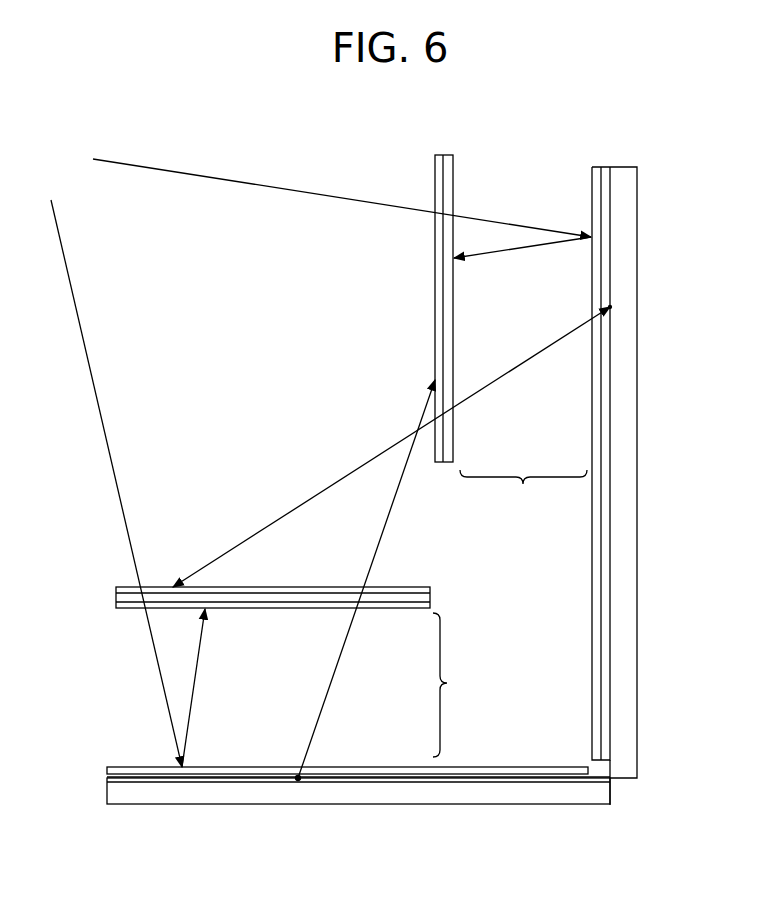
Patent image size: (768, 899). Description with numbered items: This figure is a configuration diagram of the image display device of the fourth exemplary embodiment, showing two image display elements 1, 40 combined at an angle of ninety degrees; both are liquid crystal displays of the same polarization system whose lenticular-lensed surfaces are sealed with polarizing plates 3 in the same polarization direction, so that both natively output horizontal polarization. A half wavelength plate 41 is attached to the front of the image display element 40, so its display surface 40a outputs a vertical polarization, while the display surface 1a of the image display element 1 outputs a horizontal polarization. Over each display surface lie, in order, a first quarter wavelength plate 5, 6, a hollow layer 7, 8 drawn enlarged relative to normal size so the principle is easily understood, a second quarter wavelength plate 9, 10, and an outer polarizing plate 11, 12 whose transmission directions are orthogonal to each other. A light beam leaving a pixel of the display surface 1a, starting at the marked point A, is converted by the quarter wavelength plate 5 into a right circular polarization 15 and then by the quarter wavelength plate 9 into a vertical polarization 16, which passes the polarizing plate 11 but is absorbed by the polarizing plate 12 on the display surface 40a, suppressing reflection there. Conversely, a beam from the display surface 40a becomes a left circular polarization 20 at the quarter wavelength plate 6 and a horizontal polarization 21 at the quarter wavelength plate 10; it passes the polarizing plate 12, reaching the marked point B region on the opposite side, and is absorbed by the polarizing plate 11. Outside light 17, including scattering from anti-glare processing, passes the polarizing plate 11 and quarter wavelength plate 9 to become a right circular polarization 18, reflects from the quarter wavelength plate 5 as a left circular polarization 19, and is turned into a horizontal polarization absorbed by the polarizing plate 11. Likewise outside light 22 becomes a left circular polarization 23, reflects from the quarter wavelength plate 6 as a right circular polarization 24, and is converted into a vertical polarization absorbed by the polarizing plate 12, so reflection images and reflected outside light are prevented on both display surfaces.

The image display element 1 is at (345, 805).
The display surface 1a is at (385, 772).
The polarizing plate 3 is at (638, 741).
The first quarter wavelength plate 5 is at (140, 776).
The first quarter wavelength plate 6 is at (591, 284).
The hollow layer 7 is at (451, 685).
The hollow layer 8 is at (523, 493).
The second quarter wavelength plate 9 is at (283, 609).
The second quarter wavelength plate 10 is at (447, 317).
The polarizing plate 11 is at (293, 586).
The polarizing plate 12 is at (437, 283).
The right circular polarization 15 is at (338, 672).
The vertical polarization 16 is at (396, 490).
The outside light 17 is at (102, 384).
The right circular polarization 18 is at (160, 672).
The left circular polarization 19 is at (203, 676).
The left circular polarization 20 is at (530, 360).
The horizontal polarization 21 is at (356, 476).
The outside light 22 is at (190, 172).
The left circular polarization 23 is at (495, 215).
The right circular polarization 24 is at (515, 251).
The image display element 40 is at (638, 411).
The display surface 40a is at (601, 361).
The half wavelength plate 41 is at (591, 571).
The point A is at (297, 775).
The point B is at (601, 314).